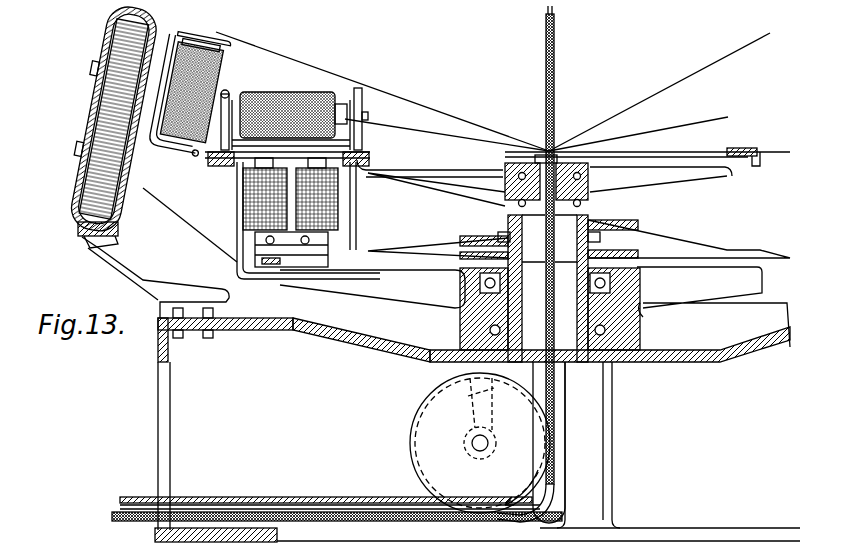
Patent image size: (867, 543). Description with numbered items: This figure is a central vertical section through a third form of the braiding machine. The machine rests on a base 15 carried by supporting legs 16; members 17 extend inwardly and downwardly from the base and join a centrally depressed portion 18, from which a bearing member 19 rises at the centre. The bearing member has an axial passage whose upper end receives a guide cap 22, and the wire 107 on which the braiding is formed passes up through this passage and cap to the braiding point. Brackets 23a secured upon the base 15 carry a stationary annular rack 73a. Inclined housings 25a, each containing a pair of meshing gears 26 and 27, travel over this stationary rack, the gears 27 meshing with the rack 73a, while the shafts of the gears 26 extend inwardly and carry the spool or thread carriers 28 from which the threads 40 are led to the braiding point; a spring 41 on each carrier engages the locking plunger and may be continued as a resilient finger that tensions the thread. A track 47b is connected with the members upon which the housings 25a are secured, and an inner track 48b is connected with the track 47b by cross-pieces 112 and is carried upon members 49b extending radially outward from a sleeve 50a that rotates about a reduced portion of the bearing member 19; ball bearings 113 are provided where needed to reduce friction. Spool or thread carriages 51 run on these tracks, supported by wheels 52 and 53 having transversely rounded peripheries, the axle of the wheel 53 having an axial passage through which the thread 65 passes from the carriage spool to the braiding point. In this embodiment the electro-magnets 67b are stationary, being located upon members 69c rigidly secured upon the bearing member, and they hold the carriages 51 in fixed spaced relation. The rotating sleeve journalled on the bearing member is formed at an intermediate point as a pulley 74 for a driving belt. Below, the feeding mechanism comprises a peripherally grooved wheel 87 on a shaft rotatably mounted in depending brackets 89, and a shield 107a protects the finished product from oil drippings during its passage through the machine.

The base 15 is at (170, 342).
The supporting legs 16 is at (171, 414).
The members 17 is at (326, 362).
The centrally depressed portion 18 is at (417, 362).
The bearing member 19 is at (549, 288).
The guide cap 22 is at (556, 152).
The brackets 23a is at (140, 276).
The housings 25a is at (100, 112).
The gear 26 is at (124, 42).
The gear 27 is at (95, 193).
The spool or thread carrier 28 is at (140, 122).
The thread 40 is at (268, 54).
The spring 41 is at (198, 30).
The track 47b is at (261, 220).
The track 48b is at (366, 172).
The members 49b is at (437, 178).
The sleeve 50a is at (592, 185).
The spool or thread carriages 51 is at (248, 125).
The wheel 52 is at (226, 92).
The wheel 53 is at (360, 96).
The thread 65 is at (400, 127).
The electro-magnets 67b is at (336, 208).
The members 69c is at (700, 236).
The annular rack 73a is at (90, 238).
The pulley 74 is at (644, 326).
The peripherally grooved wheel 87 is at (418, 443).
The brackets 89 is at (470, 409).
The wire 107 is at (555, 76).
The shield 107a is at (322, 497).
The cross-pieces 112 is at (298, 152).
The ball bearings 113 is at (520, 168).